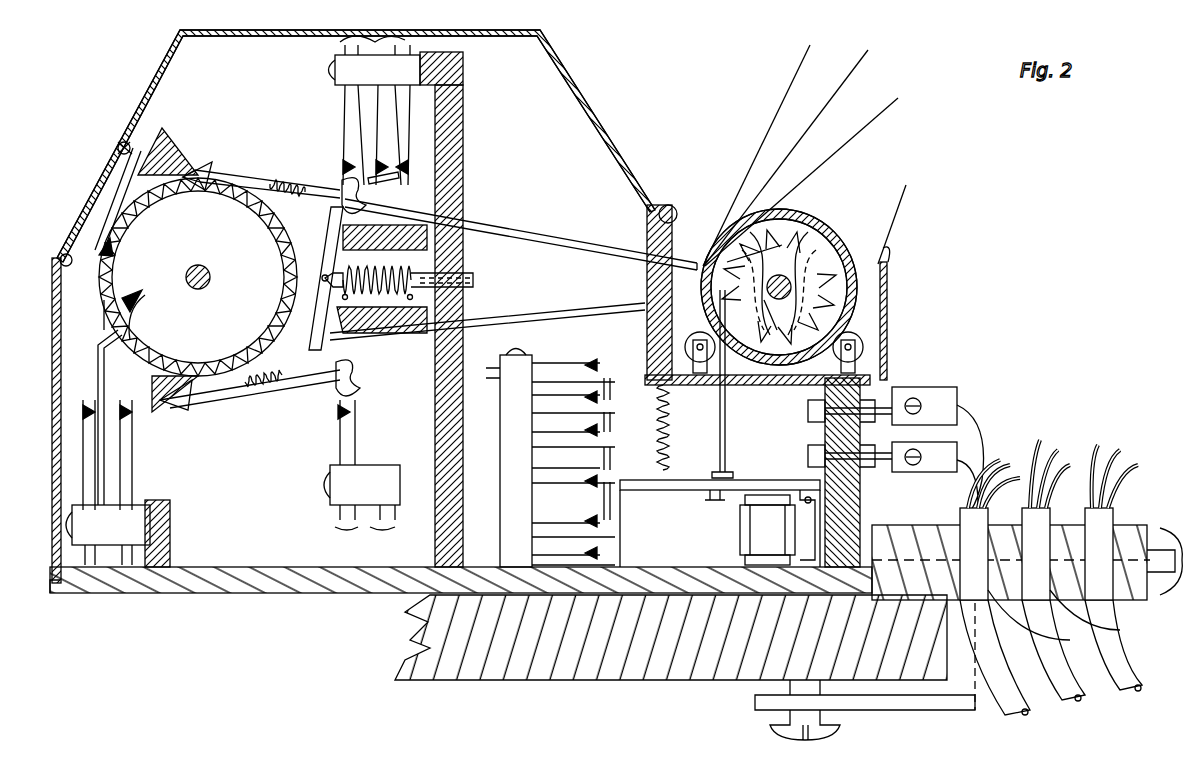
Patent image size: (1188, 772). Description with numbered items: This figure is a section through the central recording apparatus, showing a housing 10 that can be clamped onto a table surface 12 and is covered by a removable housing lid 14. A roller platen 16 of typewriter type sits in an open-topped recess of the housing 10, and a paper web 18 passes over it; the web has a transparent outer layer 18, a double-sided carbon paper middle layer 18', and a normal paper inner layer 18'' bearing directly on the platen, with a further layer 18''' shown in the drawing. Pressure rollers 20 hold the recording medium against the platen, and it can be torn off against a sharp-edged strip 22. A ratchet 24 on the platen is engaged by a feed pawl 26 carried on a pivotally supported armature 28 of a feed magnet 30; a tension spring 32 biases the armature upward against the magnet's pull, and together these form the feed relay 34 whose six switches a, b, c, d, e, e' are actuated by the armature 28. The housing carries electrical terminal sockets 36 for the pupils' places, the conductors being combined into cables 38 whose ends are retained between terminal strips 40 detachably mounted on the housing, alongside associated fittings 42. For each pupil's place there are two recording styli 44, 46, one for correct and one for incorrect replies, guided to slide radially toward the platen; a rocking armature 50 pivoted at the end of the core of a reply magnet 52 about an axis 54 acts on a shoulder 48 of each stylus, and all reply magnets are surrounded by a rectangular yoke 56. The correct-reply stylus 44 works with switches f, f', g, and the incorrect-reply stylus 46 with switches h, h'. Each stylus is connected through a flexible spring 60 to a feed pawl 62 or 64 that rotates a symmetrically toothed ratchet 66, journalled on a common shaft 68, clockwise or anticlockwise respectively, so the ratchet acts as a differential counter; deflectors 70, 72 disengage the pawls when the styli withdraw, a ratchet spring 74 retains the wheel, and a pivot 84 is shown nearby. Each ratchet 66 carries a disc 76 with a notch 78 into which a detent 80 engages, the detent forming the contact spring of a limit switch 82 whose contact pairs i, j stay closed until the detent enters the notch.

The housing 10 is at (292, 585).
The table surface 12 is at (575, 655).
The removable housing lid 14 is at (583, 78).
The roller platen 16 is at (805, 212).
The paper web 18 is at (915, 282).
The double-sided carbon paper middle layer 18' is at (756, 151).
The normal paper inner layer 18'' is at (819, 151).
The actuating lever position 18''' is at (840, 178).
The pressure rollers 20 is at (700, 362).
The sharp-edged strip 22 is at (676, 233).
The ratchet 24 is at (830, 242).
The feed pawl 26 is at (724, 432).
The armature 28 is at (762, 480).
The feed magnet 30 is at (752, 530).
The tension spring 32 is at (668, 447).
The feed relay 34 is at (655, 537).
The electrical terminal sockets 36 is at (880, 425).
The cables 38 is at (1125, 700).
The terminal strips 40 is at (1100, 632).
The terminal boxes 42 is at (935, 410).
The recording stylus for correct replies 44 is at (537, 232).
The recording stylus for incorrect replies 46 is at (548, 322).
The shoulder 48 is at (346, 185).
The rocking armature 50 is at (333, 232).
The reply magnet 52 is at (413, 285).
The axes of the armatures 54 is at (330, 270).
The rectangular yoke 56 is at (400, 242).
The extensible and flexible spring 60 is at (292, 180).
The feed pawl 62 is at (213, 170).
The feed pawl 64 is at (190, 400).
The ratchet 66 is at (178, 253).
The common shaft 68 is at (212, 270).
The deflector 70 is at (162, 138).
The deflector 72 is at (158, 408).
The ratchet spring 74 is at (115, 205).
The disc 76 is at (102, 282).
The notch 78 is at (104, 300).
The detent 80 is at (104, 362).
The limit switch 82 is at (188, 510).
The pivot screw 84 is at (116, 162).
The switch a is at (485, 362).
The switch b is at (485, 396).
The switch c is at (485, 430).
The switch d is at (485, 465).
The switch e is at (477, 523).
The switch e' is at (475, 553).
The switch f is at (325, 53).
The switch f' is at (315, 38).
The switch g is at (420, 38).
The switch h is at (362, 476).
The switch h' is at (380, 539).
The contact pair i is at (90, 568).
The contact pair j is at (130, 568).